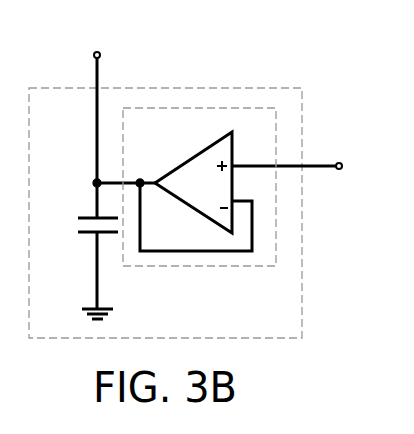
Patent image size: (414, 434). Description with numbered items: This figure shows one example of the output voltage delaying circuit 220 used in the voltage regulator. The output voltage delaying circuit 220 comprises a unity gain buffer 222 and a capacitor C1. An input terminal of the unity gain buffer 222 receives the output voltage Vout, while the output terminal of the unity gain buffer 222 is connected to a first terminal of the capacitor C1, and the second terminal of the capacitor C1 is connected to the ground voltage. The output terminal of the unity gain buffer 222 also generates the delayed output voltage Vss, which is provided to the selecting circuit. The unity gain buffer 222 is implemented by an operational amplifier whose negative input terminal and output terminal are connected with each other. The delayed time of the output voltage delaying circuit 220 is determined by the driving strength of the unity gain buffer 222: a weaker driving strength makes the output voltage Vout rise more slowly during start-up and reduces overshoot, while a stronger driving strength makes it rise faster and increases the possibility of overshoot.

The output voltage delaying circuit 220 is at (193, 181).
The unity gain buffer 222 is at (180, 135).
The capacitor C1 is at (80, 268).
The delayed output voltage Vss is at (116, 121).
The output voltage Vout is at (294, 181).